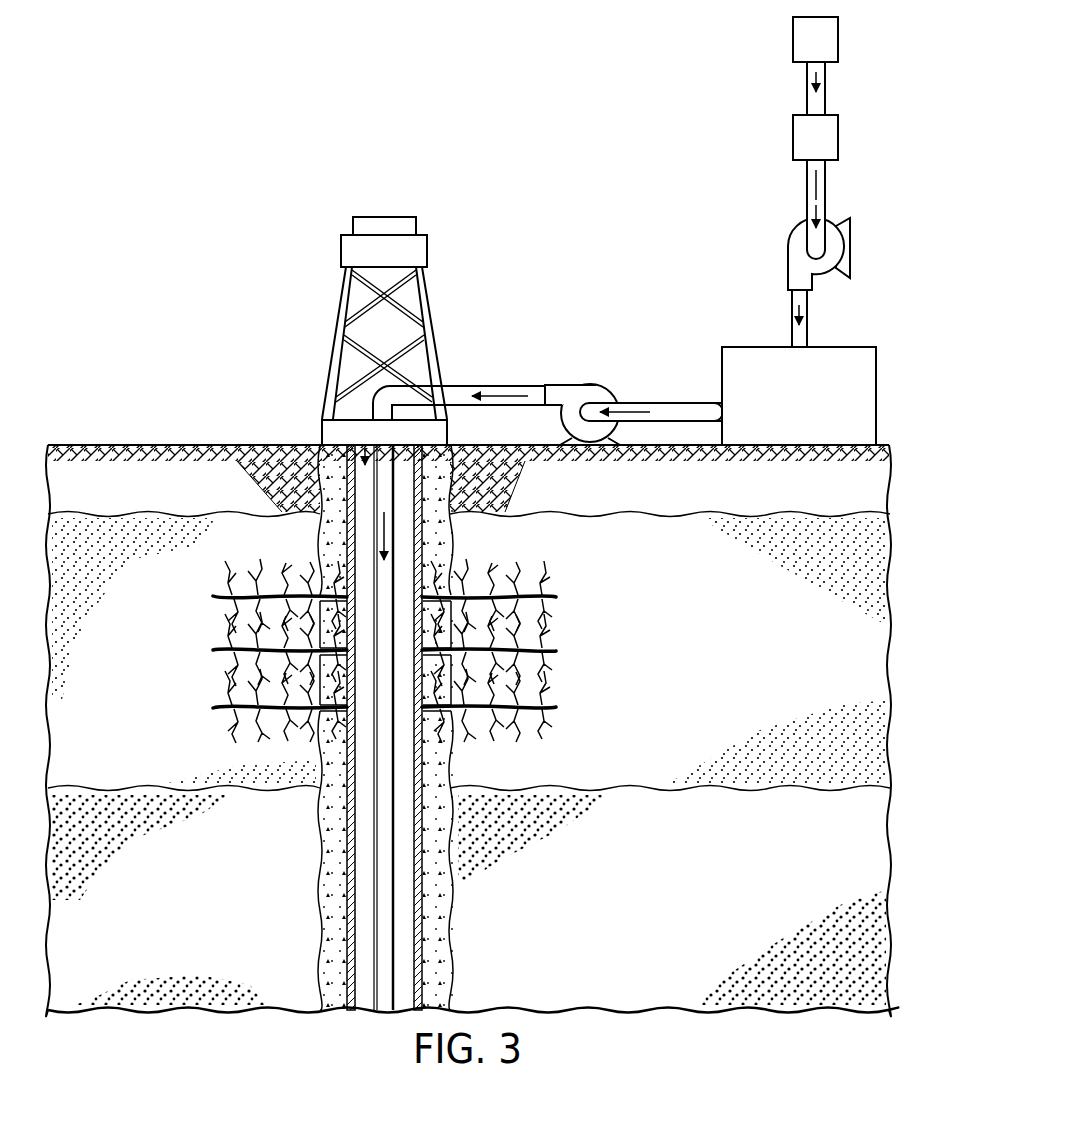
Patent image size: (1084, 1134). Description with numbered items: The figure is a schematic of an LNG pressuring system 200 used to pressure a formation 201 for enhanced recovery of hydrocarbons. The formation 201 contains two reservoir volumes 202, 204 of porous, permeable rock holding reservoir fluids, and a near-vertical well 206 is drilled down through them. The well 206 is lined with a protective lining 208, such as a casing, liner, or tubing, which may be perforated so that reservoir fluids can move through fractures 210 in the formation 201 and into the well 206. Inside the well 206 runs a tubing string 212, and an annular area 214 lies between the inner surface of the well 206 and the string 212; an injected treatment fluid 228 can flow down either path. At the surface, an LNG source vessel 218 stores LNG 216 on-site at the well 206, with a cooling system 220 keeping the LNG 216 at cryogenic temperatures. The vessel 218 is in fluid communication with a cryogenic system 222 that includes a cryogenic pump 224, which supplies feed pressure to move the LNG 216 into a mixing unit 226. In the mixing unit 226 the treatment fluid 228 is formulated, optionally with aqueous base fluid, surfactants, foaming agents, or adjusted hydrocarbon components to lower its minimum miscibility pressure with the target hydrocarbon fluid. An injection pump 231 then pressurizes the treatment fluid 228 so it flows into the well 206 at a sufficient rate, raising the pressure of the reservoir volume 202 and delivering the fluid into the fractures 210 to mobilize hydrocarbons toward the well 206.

The LNG pressuring system 200 is at (658, 113).
The formation 201 is at (150, 410).
The reservoir volume 202 is at (905, 453).
The reservoir volume 204 is at (905, 796).
The well 206 is at (360, 563).
The protective lining 208 is at (420, 955).
The fractures 210 is at (567, 565).
The tubing string 212 is at (373, 883).
The annular area 214 is at (365, 448).
The LNG 216 is at (816, 195).
The LNG source vessel 218 is at (838, 136).
The cooling system 220 is at (838, 38).
The cryogenic system 222 is at (887, 232).
The cryogenic pump 224 is at (788, 270).
The mixing unit 226 is at (755, 347).
The treatment fluid 228 is at (390, 532).
The injection pump 231 is at (566, 383).